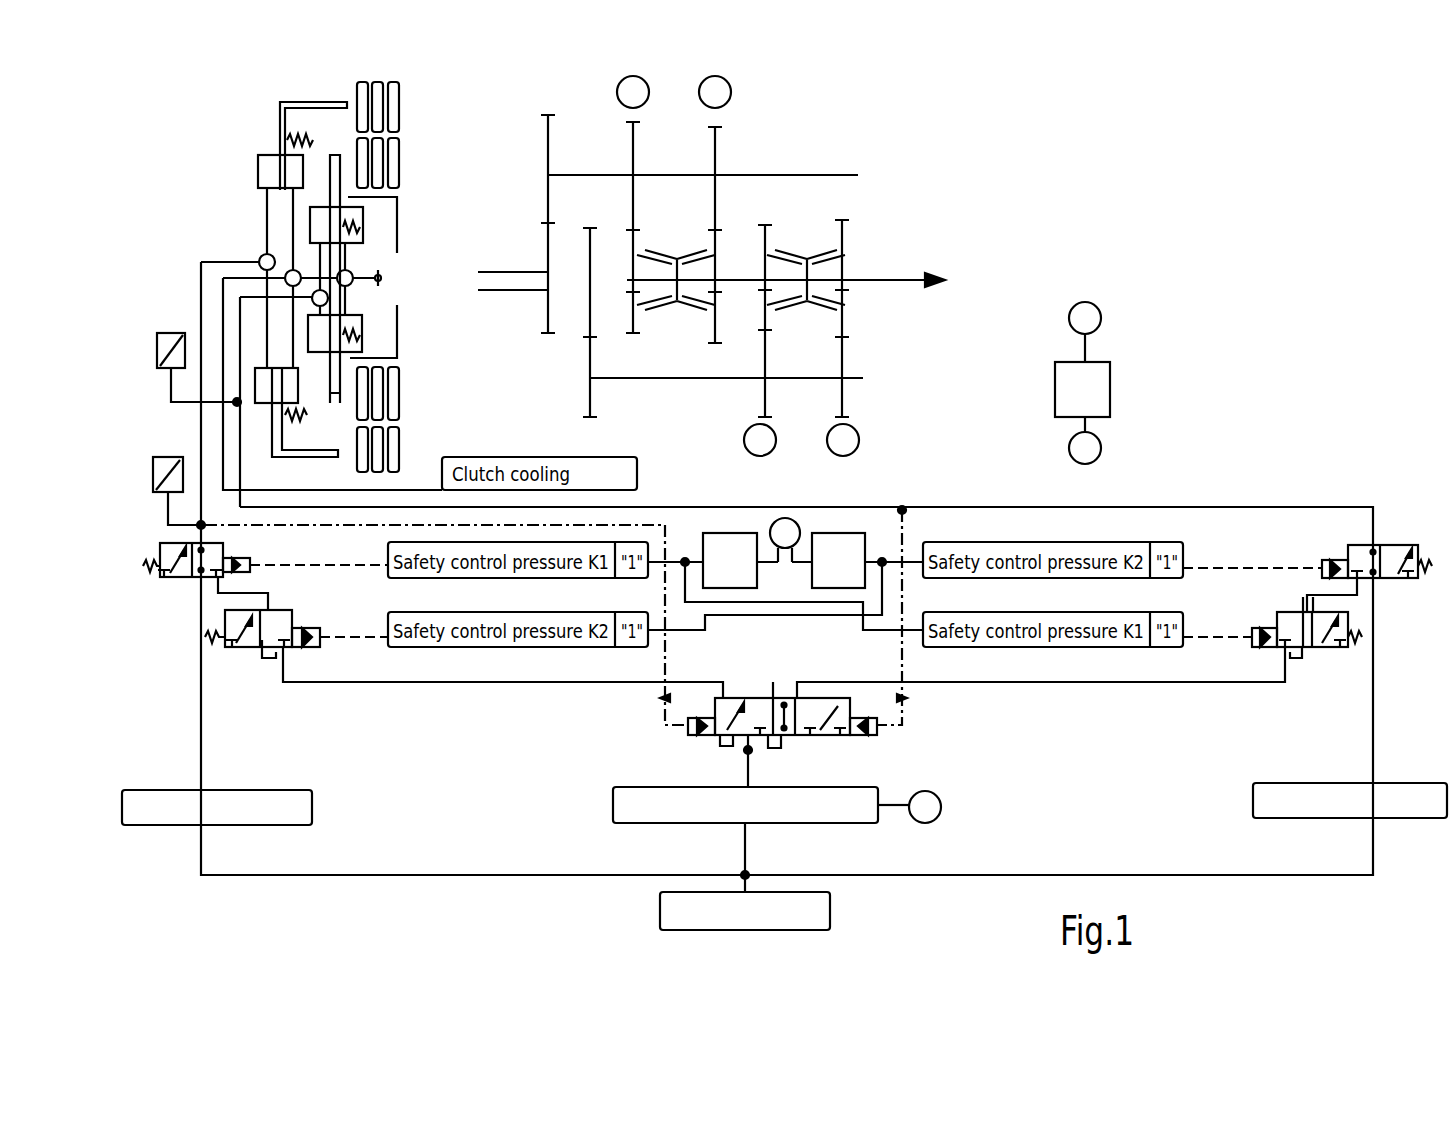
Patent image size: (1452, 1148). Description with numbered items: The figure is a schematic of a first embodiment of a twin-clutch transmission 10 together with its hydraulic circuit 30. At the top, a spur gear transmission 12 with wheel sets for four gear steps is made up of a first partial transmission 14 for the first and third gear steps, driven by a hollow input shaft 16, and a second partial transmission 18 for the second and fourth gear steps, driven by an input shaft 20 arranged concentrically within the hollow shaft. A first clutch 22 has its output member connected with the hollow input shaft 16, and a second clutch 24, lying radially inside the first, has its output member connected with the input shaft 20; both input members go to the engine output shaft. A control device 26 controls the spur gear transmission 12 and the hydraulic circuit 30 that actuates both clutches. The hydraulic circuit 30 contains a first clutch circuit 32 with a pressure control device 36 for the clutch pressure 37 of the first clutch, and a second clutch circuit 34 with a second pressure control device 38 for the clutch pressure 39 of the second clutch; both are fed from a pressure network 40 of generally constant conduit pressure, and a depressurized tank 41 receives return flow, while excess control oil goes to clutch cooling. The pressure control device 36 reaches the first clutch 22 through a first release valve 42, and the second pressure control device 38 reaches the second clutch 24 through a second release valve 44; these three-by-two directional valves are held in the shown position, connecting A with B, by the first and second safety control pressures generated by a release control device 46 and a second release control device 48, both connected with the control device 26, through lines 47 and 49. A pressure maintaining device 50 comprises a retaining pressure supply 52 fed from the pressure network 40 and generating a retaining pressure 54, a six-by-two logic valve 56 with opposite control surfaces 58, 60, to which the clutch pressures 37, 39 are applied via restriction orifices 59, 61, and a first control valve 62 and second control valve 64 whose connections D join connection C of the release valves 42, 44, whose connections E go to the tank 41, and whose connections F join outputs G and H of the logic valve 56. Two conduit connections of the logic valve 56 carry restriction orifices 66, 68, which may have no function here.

The twin-clutch transmission 10 is at (1055, 182).
The spur gear transmission 12 is at (897, 153).
The first partial transmission 14 is at (773, 152).
The hollow input shaft 16 is at (503, 268).
The second partial transmission 18 is at (880, 340).
The input shaft 20 is at (518, 290).
The first clutch 22 is at (418, 128).
The second clutch 24 is at (418, 180).
The control device 26 is at (1110, 380).
The hydraulic circuit 30 is at (1222, 436).
The first clutch circuit 32 is at (412, 731).
The second clutch circuit 34 is at (1130, 757).
The pressure control device 36 is at (312, 805).
The clutch pressure 37 is at (168, 500).
The second pressure control device 38 is at (1253, 800).
The clutch pressure 39 is at (171, 385).
The pressure network 40 is at (830, 910).
The depressurized tank 41 is at (268, 658).
The first release valve 42 is at (160, 556).
The second release valve 44 is at (1412, 552).
The release control device 46 is at (744, 577).
The control line 47 is at (672, 560).
The second release control device 48 is at (852, 577).
The control line 49 is at (913, 562).
The pressure maintaining device 50 is at (786, 723).
The retaining pressure supply 52 is at (613, 805).
The retaining pressure 54 is at (745, 770).
The logic valve 56 is at (778, 715).
The hydraulic control surface 58 is at (687, 727).
The restriction orifice 59 is at (662, 698).
The hydraulic control surface 60 is at (880, 735).
The restriction orifice 61 is at (905, 698).
The first control valve 62 is at (292, 617).
The second control valve 64 is at (1278, 622).
The restriction orifice 66 is at (773, 712).
The restriction orifice 68 is at (797, 712).